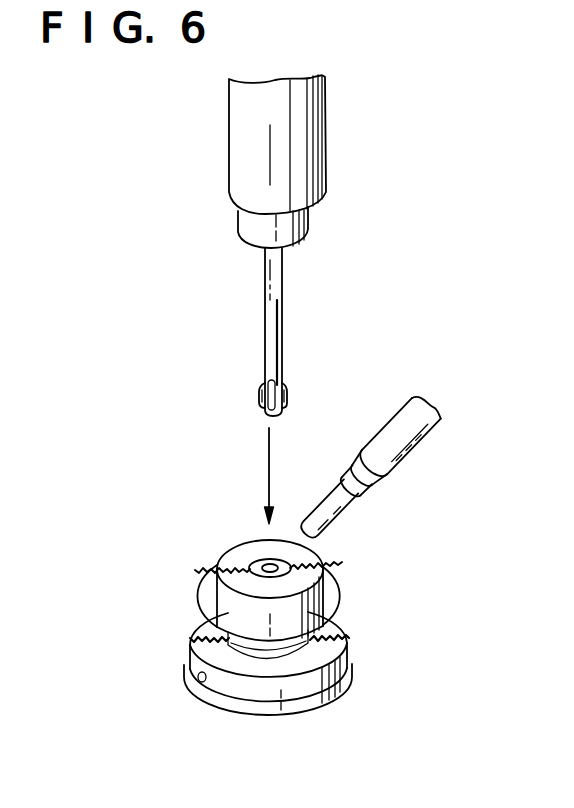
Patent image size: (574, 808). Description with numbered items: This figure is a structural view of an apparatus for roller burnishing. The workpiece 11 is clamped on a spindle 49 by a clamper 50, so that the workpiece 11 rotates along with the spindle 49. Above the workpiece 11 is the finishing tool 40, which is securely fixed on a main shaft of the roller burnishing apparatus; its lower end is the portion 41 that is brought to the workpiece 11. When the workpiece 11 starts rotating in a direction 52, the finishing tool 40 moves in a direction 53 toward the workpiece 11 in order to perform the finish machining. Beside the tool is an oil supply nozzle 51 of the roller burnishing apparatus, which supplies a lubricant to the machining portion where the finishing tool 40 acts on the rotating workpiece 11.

The workpiece 11 is at (258, 556).
The finishing tool 40 is at (270, 317).
The screwdriver tip 41 is at (268, 389).
The spindle 49 is at (300, 698).
The clamper 50 is at (233, 562).
The oil supply nozzle 51 is at (344, 509).
The direction 52 is at (343, 597).
The direction 53 is at (272, 457).